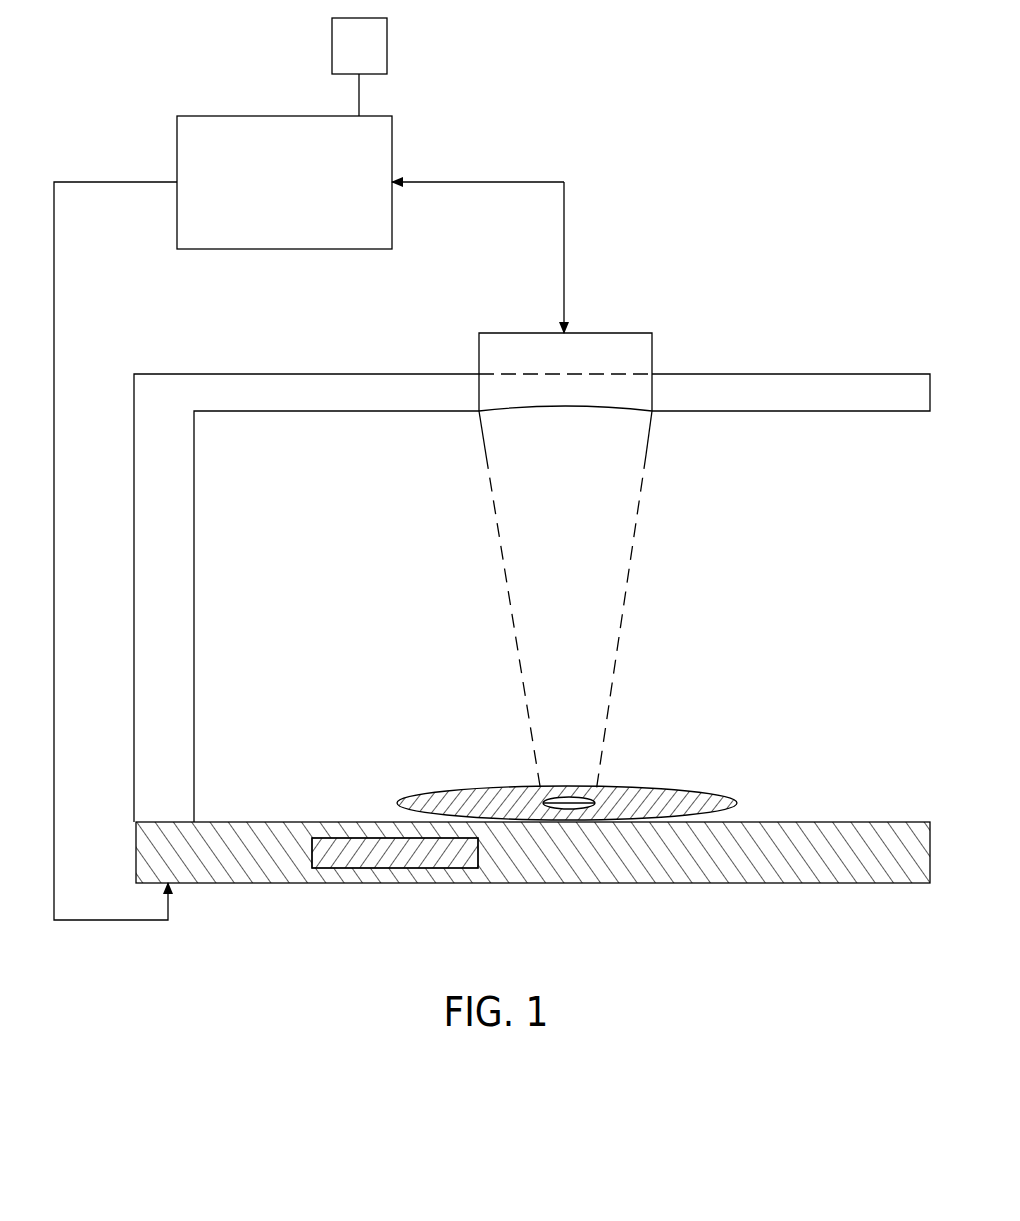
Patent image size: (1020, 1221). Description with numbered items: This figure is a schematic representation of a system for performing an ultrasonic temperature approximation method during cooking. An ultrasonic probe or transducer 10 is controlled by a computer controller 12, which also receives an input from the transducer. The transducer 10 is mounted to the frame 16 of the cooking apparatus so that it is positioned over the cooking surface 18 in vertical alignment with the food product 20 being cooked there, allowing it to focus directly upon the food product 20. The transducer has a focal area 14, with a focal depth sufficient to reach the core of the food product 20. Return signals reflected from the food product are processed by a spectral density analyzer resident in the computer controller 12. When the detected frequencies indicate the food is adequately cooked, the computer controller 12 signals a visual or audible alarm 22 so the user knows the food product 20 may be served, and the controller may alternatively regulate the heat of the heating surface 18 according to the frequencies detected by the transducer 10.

The ultrasonic transducer 10 is at (653, 357).
The computer controller 12 is at (266, 198).
The focal area 14 is at (568, 790).
The frame 16 is at (330, 375).
The cooking surface 18 is at (265, 822).
The food product 20 is at (718, 790).
The alarm 22 is at (342, 62).